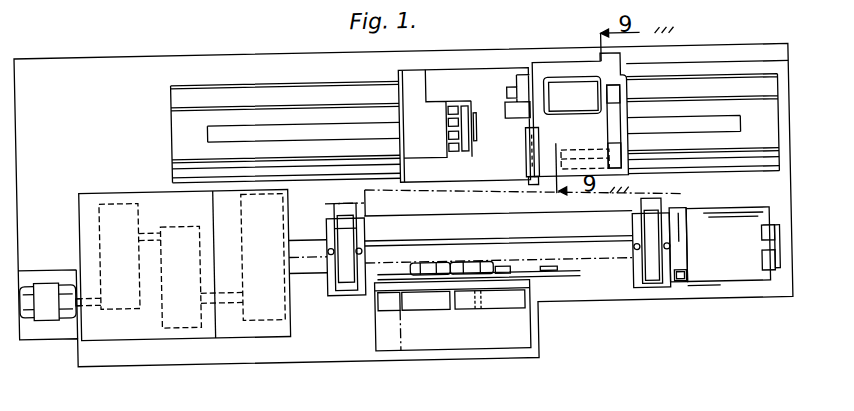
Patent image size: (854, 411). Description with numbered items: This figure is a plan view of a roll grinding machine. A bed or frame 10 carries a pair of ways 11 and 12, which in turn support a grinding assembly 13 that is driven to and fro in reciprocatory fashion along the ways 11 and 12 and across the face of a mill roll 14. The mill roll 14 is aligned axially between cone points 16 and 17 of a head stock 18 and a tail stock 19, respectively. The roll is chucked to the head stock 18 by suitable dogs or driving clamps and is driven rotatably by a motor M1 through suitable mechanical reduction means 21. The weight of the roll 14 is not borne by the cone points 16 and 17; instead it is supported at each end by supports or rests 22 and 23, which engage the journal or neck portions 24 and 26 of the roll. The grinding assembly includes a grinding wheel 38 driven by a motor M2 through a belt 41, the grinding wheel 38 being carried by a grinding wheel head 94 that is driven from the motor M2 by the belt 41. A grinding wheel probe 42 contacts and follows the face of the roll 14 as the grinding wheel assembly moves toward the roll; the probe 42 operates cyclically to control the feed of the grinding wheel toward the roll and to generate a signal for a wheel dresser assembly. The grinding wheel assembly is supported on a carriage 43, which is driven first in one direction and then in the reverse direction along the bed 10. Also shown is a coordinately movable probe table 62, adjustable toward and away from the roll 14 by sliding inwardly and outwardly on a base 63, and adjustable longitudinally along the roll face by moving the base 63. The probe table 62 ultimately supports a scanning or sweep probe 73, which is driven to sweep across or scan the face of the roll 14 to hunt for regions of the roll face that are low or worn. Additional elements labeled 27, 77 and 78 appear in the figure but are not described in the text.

The bed or frame 10 is at (72, 77).
The way 11 is at (181, 101).
The way 12 is at (183, 173).
The grinding assembly 13 is at (487, 79).
The mill roll 14 is at (380, 196).
The cone point 16 is at (290, 244).
The cone point 17 is at (675, 227).
The head stock 18 is at (284, 343).
The tail stock 19 is at (737, 285).
The mechanical reduction means 21 is at (175, 334).
The support or rest 22 is at (341, 292).
The support or rest 23 is at (648, 292).
The journal or neck portion 24 is at (334, 198).
The journal or neck portion 26 is at (664, 200).
The block 27 is at (674, 296).
The grinding wheel 38 is at (526, 189).
The belt 41 is at (614, 137).
The grinding wheel probe 42 is at (543, 187).
The carriage 43 is at (444, 87).
The probe table 62 is at (506, 343).
The base 63 is at (446, 281).
The scanning or sweep probe 73 is at (452, 281).
The tool rail 77 is at (386, 281).
The tool holder 78 is at (506, 282).
The grinding wheel head 94 is at (538, 76).
The motor M1 is at (45, 288).
The motor M2 is at (570, 86).